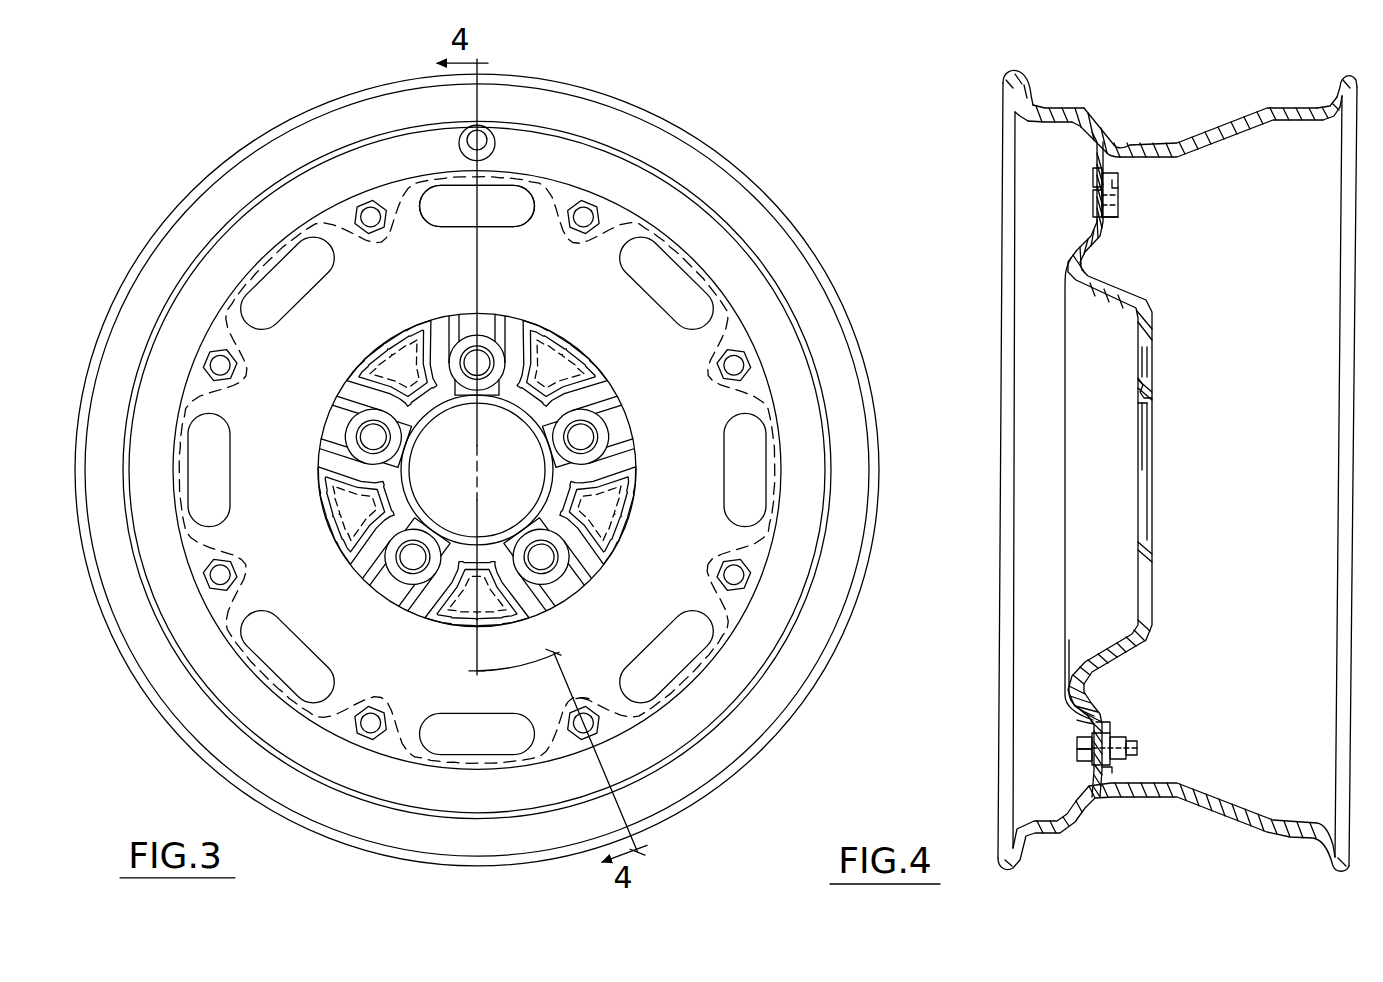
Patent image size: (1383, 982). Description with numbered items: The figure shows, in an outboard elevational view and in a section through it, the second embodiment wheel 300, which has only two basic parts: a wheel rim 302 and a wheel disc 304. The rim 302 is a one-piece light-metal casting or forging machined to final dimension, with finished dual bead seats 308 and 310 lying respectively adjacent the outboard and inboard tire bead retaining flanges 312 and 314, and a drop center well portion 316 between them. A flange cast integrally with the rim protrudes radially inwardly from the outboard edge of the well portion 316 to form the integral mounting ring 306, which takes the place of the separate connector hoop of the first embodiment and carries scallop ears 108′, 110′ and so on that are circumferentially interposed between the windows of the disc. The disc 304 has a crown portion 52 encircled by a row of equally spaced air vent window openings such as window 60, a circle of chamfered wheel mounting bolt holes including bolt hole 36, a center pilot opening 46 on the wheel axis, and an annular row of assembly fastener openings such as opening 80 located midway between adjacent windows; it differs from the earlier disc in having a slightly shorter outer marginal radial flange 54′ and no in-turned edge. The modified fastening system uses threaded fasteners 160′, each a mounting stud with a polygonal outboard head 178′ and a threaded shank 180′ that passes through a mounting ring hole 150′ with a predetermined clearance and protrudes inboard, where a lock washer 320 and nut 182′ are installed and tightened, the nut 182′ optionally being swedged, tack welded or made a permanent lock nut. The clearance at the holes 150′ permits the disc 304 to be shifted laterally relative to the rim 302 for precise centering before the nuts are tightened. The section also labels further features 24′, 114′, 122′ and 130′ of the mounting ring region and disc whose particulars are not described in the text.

In FIG. 3, the wheel 300 is at (477, 470).
In FIG. 4, the wheel 300 is at (990, 78).
In FIG. 4, the wheel rim 302 is at (1000, 123).
In FIG. 4, the wheel disc 304 is at (1065, 252).
In FIG. 4, the integral mounting ring 306 is at (1122, 200).
In FIG. 4, the outboard bead seat 308 is at (1050, 108).
In FIG. 4, the inboard bead seat 310 is at (1314, 108).
In FIG. 4, the outboard tire bead retaining flange 312 is at (1012, 73).
In FIG. 4, the inboard tire bead retaining flange 314 is at (1350, 75).
In FIG. 4, the drop center well portion 316 is at (1158, 143).
In FIG. 4, the lock washer 320 is at (1118, 775).
In FIG. 3, the valve stem 24′ is at (448, 142).
In FIG. 4, the valve stem 24′ is at (1100, 125).
In FIG. 3, the crown portion 52 is at (477, 470).
In FIG. 4, the crown portion 52 is at (1067, 266).
In FIG. 4, the outer marginal radial flange 54′ is at (1093, 178).
In FIG. 3, the window opening 60 is at (477, 223).
In FIG. 4, the window opening 60 is at (1093, 210).
In FIG. 4, the wheel mounting bolt hole 36 is at (1137, 378).
In FIG. 4, the center pilot opening 46 is at (1140, 408).
In FIG. 4, the assembly fastener opening 80 is at (1088, 722).
In FIG. 3, the scallop ear 108′ is at (507, 224).
In FIG. 3, the scallop ear 110′ is at (477, 470).
In FIG. 3, the stud 114′ is at (599, 670).
In FIG. 4, the stud 114′ is at (1100, 733).
In FIG. 4, the flange 122′ is at (1113, 218).
In FIG. 4, the boss 130′ is at (1120, 183).
In FIG. 4, the mounting ring hole 150′ is at (1118, 740).
In FIG. 3, the threaded fastener 160′ is at (565, 747).
In FIG. 4, the threaded fastener 160′ is at (1072, 752).
In FIG. 4, the polygonal outboard head 178′ is at (1085, 735).
In FIG. 4, the threaded shank 180′ is at (1088, 766).
In FIG. 4, the nut 182′ is at (1138, 738).